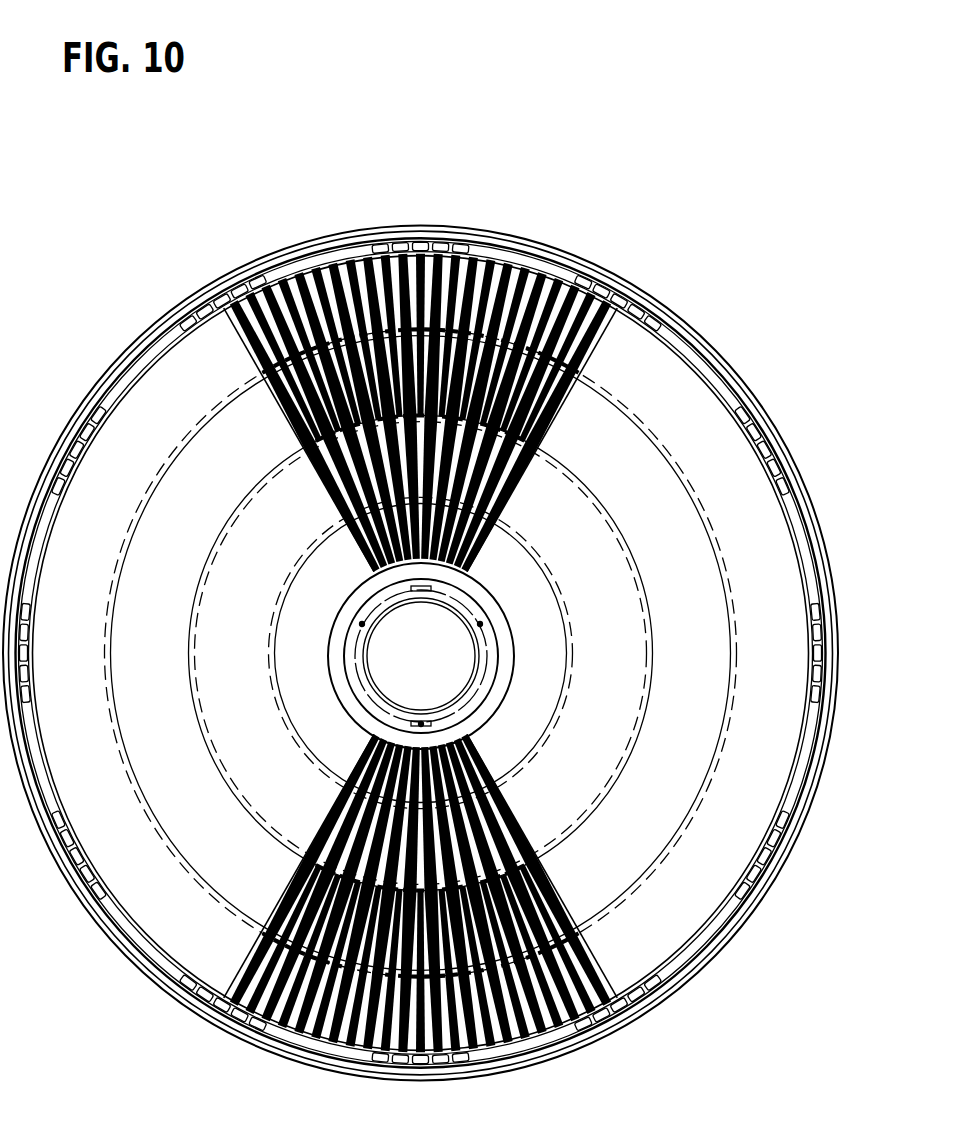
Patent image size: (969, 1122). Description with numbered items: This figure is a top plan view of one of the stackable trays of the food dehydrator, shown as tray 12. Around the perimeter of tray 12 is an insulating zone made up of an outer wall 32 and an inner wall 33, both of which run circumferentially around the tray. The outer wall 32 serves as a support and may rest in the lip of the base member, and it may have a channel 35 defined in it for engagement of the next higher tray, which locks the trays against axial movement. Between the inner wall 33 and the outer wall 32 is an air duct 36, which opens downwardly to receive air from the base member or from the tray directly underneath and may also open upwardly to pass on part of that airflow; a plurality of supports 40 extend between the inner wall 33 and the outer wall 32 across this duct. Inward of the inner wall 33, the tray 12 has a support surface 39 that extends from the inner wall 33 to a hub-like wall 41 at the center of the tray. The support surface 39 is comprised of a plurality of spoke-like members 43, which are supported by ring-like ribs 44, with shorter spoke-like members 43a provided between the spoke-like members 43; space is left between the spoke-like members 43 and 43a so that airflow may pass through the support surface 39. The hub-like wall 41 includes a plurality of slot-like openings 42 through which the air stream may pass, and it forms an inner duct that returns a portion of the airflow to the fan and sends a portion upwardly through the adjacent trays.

The tray 12 is at (643, 288).
The air duct 36 is at (106, 376).
The channel 35 is at (812, 723).
The supports 40 is at (818, 744).
The outer wall 32 is at (810, 806).
The inner wall 33 is at (811, 819).
The ring-like ribs 44 is at (273, 677).
The support surface 39 is at (506, 508).
The spoke-like members 43 is at (382, 552).
The shorter spoke-like members 43a is at (322, 419).
The hub-like wall 41 is at (474, 590).
The slot-like openings 42 is at (479, 655).